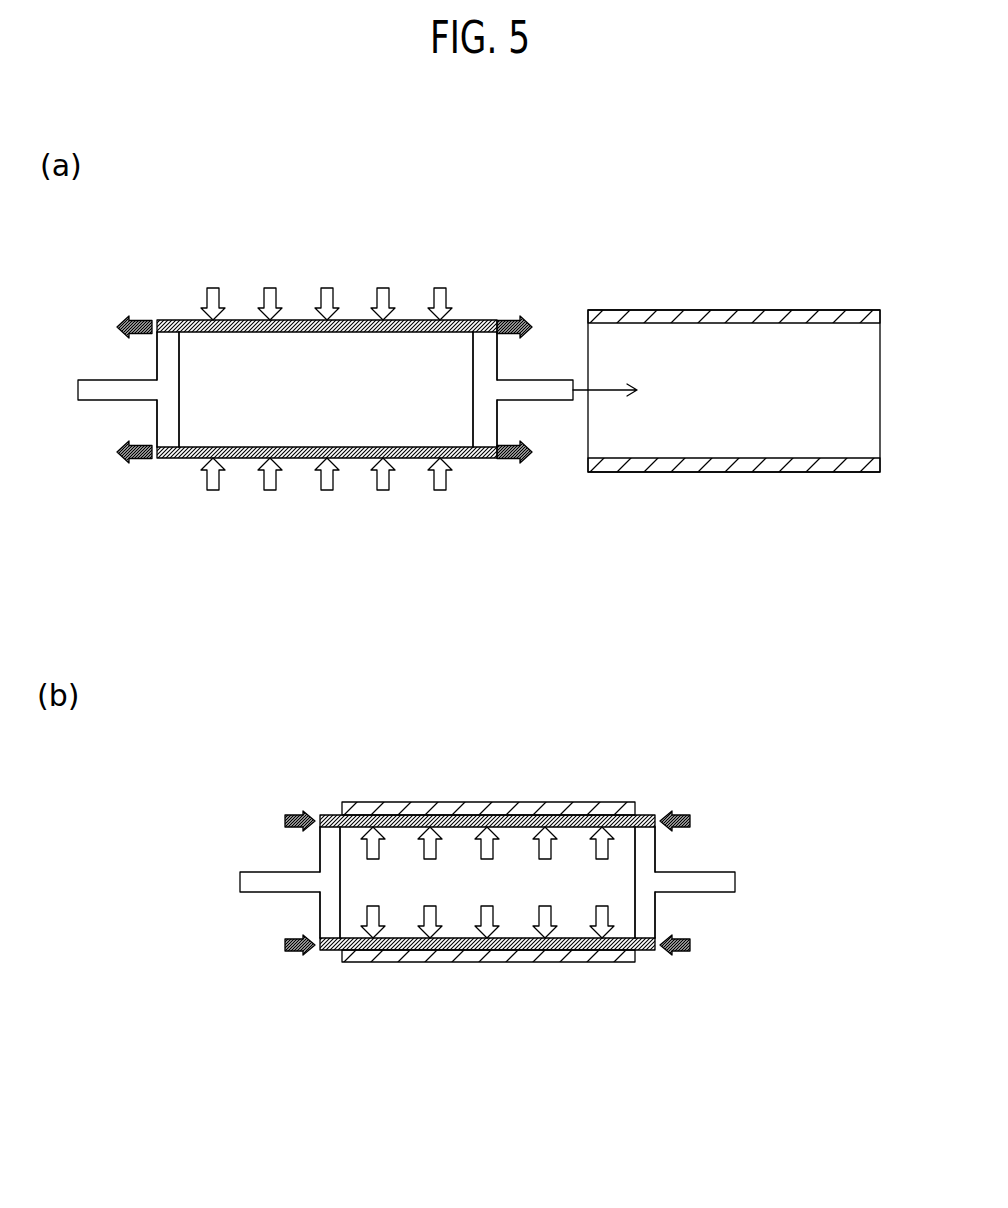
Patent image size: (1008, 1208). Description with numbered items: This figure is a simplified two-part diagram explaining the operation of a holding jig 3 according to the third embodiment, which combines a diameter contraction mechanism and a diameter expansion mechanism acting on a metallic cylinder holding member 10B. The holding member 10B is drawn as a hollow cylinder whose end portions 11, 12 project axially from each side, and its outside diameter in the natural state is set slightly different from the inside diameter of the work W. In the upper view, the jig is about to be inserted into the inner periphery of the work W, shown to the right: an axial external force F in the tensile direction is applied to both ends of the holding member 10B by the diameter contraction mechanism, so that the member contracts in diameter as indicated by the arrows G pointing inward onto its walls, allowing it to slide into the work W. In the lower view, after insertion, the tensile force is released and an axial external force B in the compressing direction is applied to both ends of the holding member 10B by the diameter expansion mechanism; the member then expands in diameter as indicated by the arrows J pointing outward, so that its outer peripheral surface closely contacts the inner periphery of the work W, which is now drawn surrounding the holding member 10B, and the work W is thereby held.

The holding jig 3 is at (484, 279).
The metallic cylinder holding member 10B is at (357, 320).
The left wall / inlet side wall 11 is at (175, 380).
The right wall / outlet side wall 12 is at (475, 382).
The work W is at (736, 304).
The arrows indicating diameter contraction G is at (262, 297).
The axial external force in the tensile direction F is at (325, 390).
The axial external force in the compressing direction B is at (491, 883).
The arrows indicating diameter expansion J is at (418, 915).